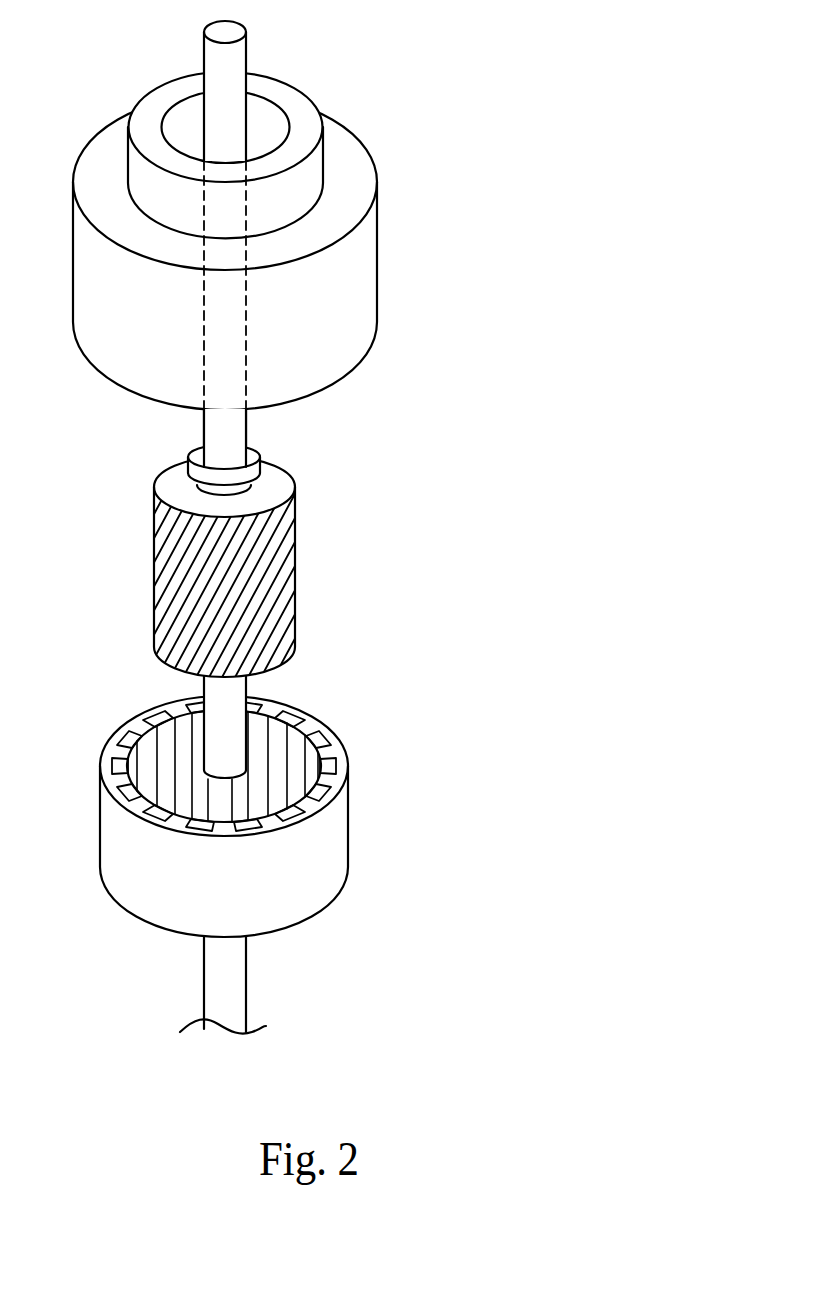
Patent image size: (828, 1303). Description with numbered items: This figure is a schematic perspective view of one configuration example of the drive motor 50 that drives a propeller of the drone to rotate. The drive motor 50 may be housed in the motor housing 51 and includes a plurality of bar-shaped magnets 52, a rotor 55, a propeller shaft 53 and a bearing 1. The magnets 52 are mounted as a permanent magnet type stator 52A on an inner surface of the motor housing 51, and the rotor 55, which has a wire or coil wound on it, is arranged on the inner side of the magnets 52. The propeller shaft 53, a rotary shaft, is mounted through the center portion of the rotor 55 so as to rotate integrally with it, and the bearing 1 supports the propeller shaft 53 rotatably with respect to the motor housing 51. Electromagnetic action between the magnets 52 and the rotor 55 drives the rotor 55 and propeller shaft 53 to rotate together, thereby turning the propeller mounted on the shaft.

The bearing 1 is at (303, 447).
The drive motor 50 is at (341, 527).
The motor housing 51 is at (353, 178).
The bar-shaped magnets 52 is at (265, 705).
The stator 52A is at (345, 843).
The propeller shaft 53 is at (233, 57).
The rotor 55 is at (295, 557).